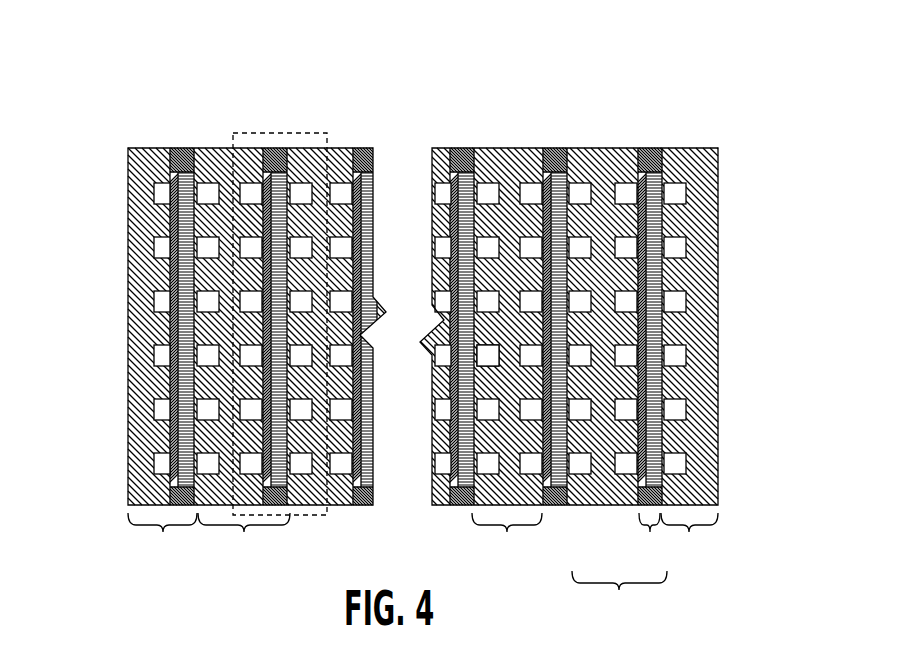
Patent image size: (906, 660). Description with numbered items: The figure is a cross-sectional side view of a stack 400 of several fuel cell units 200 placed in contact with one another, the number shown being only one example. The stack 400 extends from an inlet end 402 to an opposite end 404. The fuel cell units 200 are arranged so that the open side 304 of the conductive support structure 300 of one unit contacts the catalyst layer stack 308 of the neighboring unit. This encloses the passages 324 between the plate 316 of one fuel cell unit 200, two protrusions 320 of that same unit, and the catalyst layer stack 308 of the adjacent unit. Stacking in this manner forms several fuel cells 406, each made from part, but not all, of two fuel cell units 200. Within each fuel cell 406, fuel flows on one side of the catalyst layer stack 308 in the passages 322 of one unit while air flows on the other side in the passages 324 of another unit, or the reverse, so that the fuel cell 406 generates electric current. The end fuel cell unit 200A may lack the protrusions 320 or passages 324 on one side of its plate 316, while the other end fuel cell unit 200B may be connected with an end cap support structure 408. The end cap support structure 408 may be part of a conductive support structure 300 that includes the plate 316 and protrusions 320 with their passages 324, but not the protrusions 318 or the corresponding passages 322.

The stack 400 is at (113, 100).
The inlet end 402 is at (726, 271).
The opposite end 404 is at (124, 281).
The fuel cell 406 is at (280, 132).
The open side 304 is at (278, 271).
The passages 324 is at (446, 306).
The plate 316 is at (516, 303).
The passages 322 is at (532, 275).
The protrusions 318 is at (569, 303).
The protrusions 320 is at (487, 383).
The fuel cell unit 200A is at (162, 540).
The fuel cell unit 200 is at (244, 540).
The fuel cell unit 200B is at (619, 597).
The conductive support structure 300 is at (507, 540).
The catalyst layer stack 308 is at (649, 540).
The end cap support structure 408 is at (689, 540).